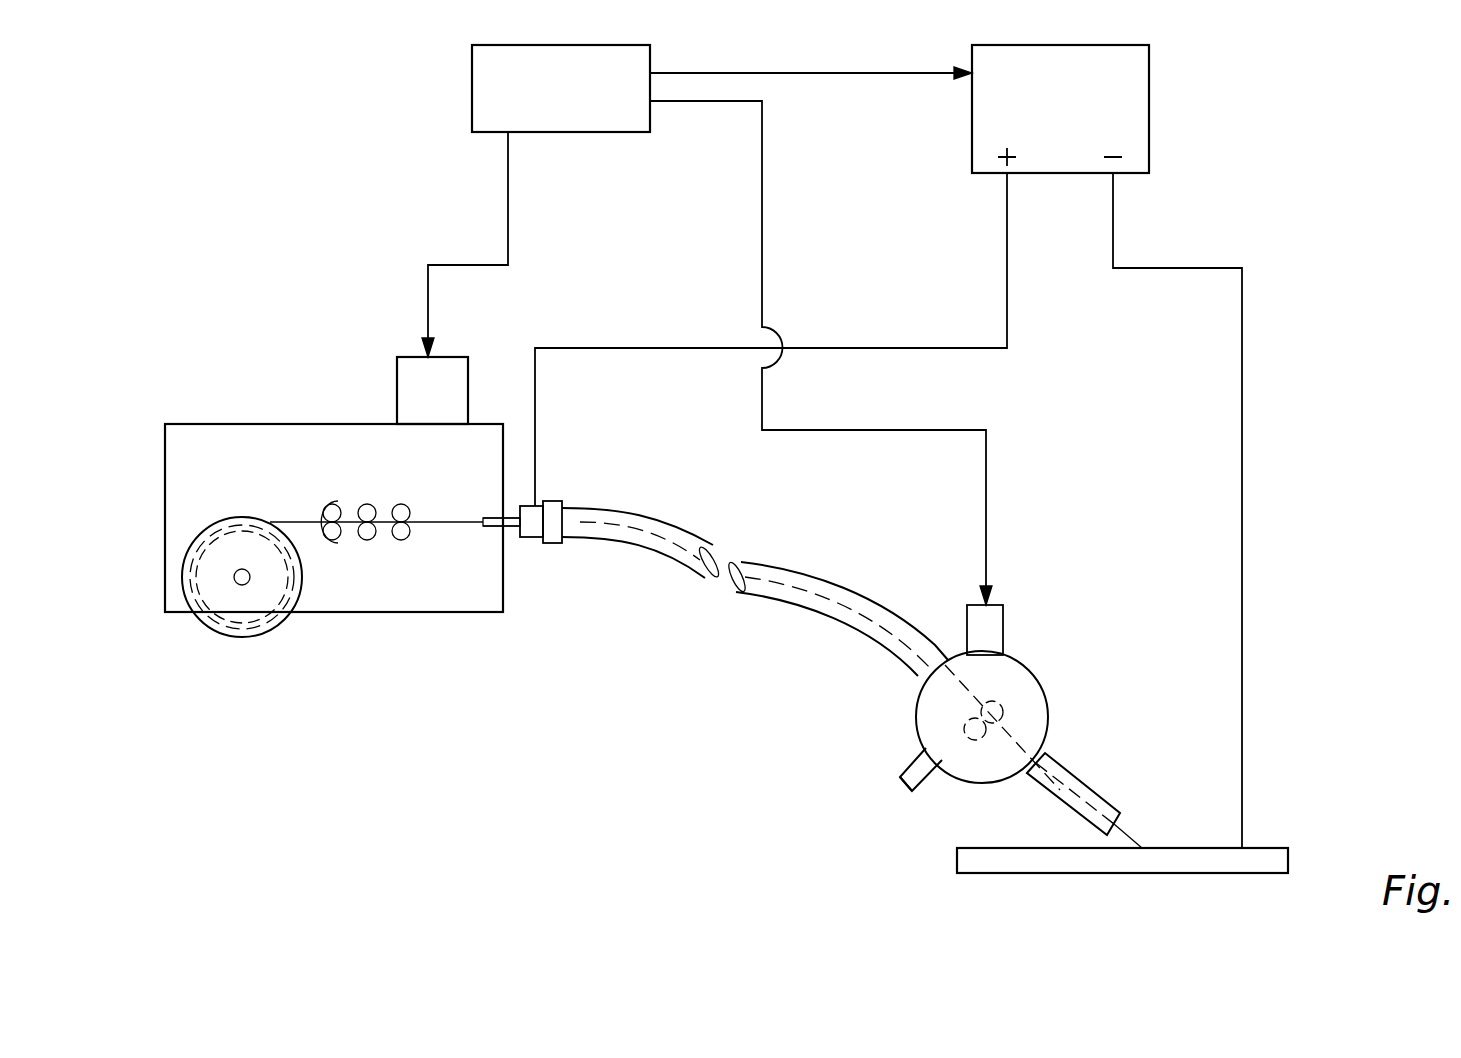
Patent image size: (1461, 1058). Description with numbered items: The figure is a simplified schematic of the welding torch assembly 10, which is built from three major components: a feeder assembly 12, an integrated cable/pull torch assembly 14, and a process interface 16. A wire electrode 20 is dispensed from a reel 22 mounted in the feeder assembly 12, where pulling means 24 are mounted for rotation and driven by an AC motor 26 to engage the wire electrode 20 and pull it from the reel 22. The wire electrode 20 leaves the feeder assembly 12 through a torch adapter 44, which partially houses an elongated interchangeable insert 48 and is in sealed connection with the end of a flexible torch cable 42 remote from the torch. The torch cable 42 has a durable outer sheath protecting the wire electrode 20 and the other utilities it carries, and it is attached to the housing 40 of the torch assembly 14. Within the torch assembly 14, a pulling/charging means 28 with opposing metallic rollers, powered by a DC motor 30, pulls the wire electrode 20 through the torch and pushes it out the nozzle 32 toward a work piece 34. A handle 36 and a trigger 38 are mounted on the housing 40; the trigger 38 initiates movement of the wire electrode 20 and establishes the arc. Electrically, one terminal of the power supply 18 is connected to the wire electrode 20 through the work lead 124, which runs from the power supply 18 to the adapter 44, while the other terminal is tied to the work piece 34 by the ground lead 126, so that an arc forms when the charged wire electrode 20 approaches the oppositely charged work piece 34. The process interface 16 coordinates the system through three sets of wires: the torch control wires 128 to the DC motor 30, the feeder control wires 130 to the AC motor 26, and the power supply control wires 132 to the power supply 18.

The welding torch assembly 10 is at (312, 200).
The feeder assembly 12 is at (196, 424).
The integrated cable/pull torch assembly 14 is at (893, 677).
The process interface 16 is at (618, 132).
The power supply 18 is at (1149, 122).
The wire electrode 20 is at (297, 522).
The reel 22 is at (240, 637).
The pulling means 24 is at (372, 488).
The AC motor 26 is at (408, 357).
The pulling/charging means 28 is at (1008, 704).
The DC motor 30 is at (1003, 600).
The nozzle 32 is at (1080, 777).
The work piece 34 is at (1100, 873).
The handle 36 is at (902, 785).
The trigger 38 is at (943, 765).
The housing 40 is at (916, 706).
The torch cable 42 is at (830, 580).
The torch adapter 44 is at (530, 537).
The interchangeable insert 48 is at (490, 526).
The work lead 124 is at (1007, 262).
The ground lead 126 is at (1242, 395).
The torch control wires 128 is at (947, 430).
The feeder control wires 130 is at (508, 183).
The power supply control wires 132 is at (888, 73).